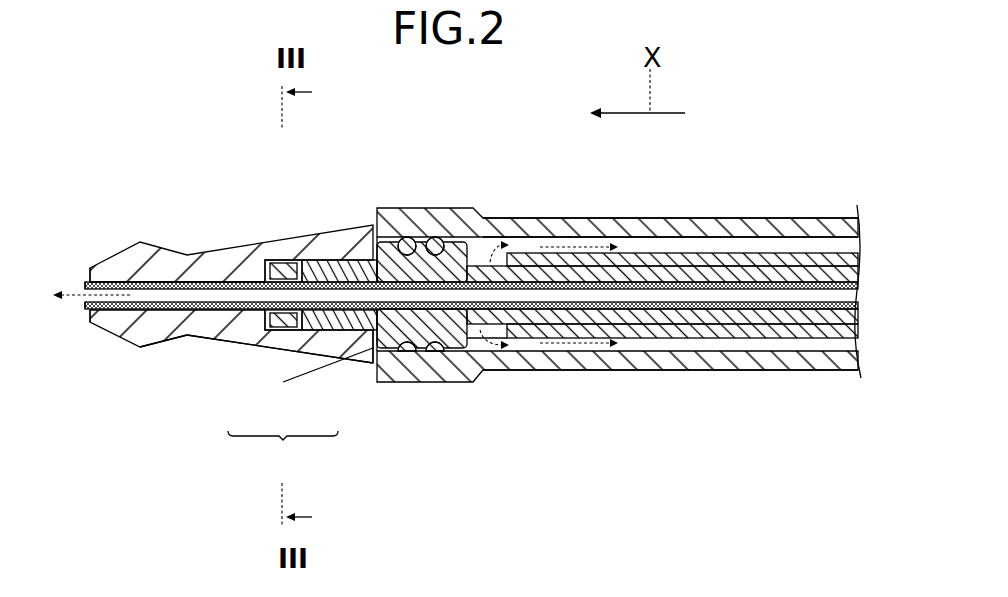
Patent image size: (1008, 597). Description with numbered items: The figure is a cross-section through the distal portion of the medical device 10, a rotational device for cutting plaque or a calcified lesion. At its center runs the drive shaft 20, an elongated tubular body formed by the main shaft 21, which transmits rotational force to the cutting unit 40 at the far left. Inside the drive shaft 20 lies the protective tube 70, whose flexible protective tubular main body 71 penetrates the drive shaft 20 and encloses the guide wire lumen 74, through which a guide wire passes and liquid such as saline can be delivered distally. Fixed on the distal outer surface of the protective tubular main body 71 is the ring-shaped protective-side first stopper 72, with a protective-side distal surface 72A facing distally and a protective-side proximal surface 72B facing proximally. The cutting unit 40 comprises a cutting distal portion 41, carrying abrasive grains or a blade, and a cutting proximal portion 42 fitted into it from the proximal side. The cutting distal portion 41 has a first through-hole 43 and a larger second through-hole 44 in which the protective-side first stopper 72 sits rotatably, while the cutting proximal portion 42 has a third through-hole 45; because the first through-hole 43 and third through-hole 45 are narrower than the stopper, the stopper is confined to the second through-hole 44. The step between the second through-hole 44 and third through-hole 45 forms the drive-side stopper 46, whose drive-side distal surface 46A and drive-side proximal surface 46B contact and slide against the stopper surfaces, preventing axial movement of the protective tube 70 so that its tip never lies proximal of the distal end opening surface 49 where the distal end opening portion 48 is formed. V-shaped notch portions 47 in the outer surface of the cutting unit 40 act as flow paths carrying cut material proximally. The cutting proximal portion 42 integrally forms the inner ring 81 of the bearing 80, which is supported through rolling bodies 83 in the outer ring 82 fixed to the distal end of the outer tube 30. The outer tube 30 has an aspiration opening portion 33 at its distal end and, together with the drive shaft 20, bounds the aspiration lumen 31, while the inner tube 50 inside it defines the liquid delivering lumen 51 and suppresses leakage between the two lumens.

The medical device 10 is at (115, 137).
The drive shaft 20 is at (655, 268).
The main shaft 21 is at (640, 338).
The outer tube 30 is at (548, 218).
The aspiration lumen 31 is at (808, 240).
The aspiration opening portion 33 is at (478, 342).
The cutting unit 40 is at (220, 244).
The cutting distal portion 41 is at (170, 258).
The cutting proximal portion 42 is at (350, 262).
The first through-hole 43 is at (174, 313).
The second through-hole 44 is at (245, 348).
The third through-hole 45 is at (343, 343).
The drive-side stopper 46 is at (283, 450).
The drive-side distal surface 46A is at (240, 345).
The drive-side proximal surface 46B is at (300, 350).
The notch portion 47 is at (365, 362).
The distal end opening portion 48 is at (88, 276).
The distal end opening surface 49 is at (89, 320).
The inner tube 50 is at (815, 350).
The liquid delivering lumen 51 is at (845, 272).
The protective tube 70 is at (735, 355).
The protective tubular main body 71 is at (618, 253).
The protective-side first stopper 72 is at (284, 262).
The protective-side distal surface 72A is at (273, 262).
The protective-side proximal surface 72B is at (297, 262).
The guide wire lumen 74 is at (758, 266).
The bearing 80 is at (383, 212).
The inner ring 81 is at (440, 382).
The outer ring 82 is at (445, 238).
The rolling bodies 83 is at (410, 240).